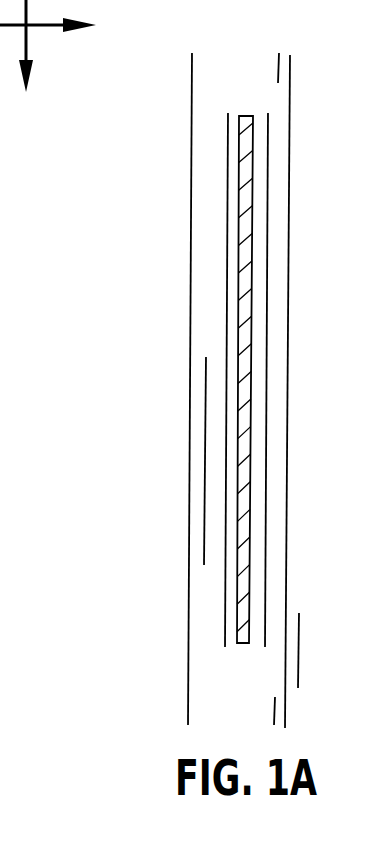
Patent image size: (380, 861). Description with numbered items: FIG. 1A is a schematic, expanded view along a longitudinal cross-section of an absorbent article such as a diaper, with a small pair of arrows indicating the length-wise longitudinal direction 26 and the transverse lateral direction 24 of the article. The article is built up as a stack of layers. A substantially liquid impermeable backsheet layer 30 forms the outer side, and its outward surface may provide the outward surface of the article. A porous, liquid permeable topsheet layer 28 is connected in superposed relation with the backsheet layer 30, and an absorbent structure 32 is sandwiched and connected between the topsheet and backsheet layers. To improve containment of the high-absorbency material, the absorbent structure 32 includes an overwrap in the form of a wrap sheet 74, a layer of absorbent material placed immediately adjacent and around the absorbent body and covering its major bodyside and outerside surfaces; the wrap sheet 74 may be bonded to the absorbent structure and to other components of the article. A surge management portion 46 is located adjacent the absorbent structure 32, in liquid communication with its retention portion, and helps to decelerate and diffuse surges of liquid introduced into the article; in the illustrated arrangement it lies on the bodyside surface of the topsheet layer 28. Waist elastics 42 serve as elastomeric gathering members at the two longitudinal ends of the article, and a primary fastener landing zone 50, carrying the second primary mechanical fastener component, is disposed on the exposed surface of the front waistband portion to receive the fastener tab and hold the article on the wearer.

The lateral direction 24 is at (50, 29).
The longitudinal direction 26 is at (30, 10).
The topsheet layer 28 is at (190, 290).
The backsheet layer 30 is at (290, 92).
The absorbent structure 32 is at (243, 645).
The waist elastics 42 is at (278, 72).
The surge management portion 46 is at (205, 482).
The primary fastener landing zone 50 is at (299, 658).
The wrap sheet 74 is at (228, 183).